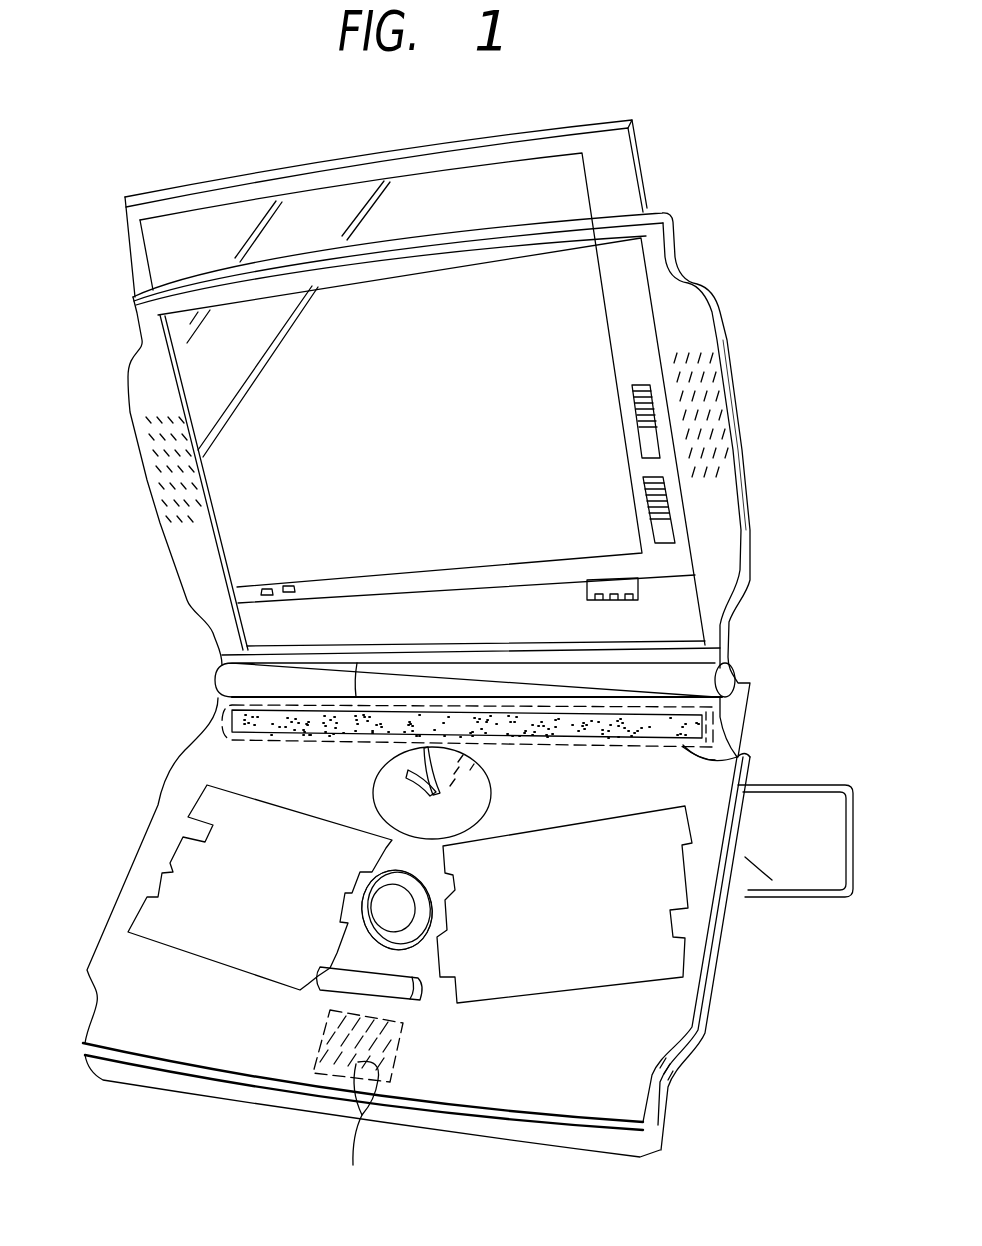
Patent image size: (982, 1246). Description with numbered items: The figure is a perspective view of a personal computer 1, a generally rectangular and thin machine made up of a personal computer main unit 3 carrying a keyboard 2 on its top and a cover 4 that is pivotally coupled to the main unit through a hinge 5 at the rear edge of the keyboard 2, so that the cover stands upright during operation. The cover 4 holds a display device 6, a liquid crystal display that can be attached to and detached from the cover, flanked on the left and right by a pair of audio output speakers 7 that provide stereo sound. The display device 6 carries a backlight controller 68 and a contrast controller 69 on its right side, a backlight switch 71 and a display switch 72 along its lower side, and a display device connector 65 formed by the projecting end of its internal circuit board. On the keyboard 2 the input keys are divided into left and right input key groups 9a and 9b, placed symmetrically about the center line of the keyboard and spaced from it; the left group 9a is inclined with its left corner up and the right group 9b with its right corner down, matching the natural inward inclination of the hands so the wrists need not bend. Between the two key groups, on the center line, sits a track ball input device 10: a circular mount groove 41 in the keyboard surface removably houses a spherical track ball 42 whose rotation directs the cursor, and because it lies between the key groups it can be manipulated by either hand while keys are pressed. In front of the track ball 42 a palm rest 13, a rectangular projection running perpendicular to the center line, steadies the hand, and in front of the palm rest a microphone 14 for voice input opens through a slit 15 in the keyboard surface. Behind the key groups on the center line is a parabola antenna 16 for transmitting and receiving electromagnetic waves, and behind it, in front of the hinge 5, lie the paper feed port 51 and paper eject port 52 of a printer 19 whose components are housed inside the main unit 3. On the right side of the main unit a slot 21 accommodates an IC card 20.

The personal computer 1 is at (655, 128).
The keyboard 2 is at (690, 1027).
The personal computer main unit 3 is at (670, 1098).
The cover 4 is at (672, 238).
The hinge 5 is at (546, 678).
The display device 6 is at (428, 185).
The audio output speakers 7 is at (155, 440).
The left input key group 9a is at (175, 860).
The right input key group 9b is at (670, 962).
The track ball input device 10 is at (401, 907).
The palm rest 13 is at (320, 985).
The microphone 14 is at (332, 1082).
The slit 15 is at (358, 1130).
The parabola antenna 16 is at (488, 788).
The printer 19 is at (723, 712).
The IC card 20 is at (817, 880).
The slot 21 is at (745, 857).
The mount groove 41 is at (427, 893).
The track ball 42 is at (385, 912).
The paper feed port 51 is at (660, 710).
The paper eject port 52 is at (740, 757).
The display device connector 65 is at (645, 581).
The backlight controller 68 is at (638, 432).
The contrast controller 69 is at (647, 512).
The backlight switch 71 is at (266, 588).
The display switch 72 is at (290, 586).